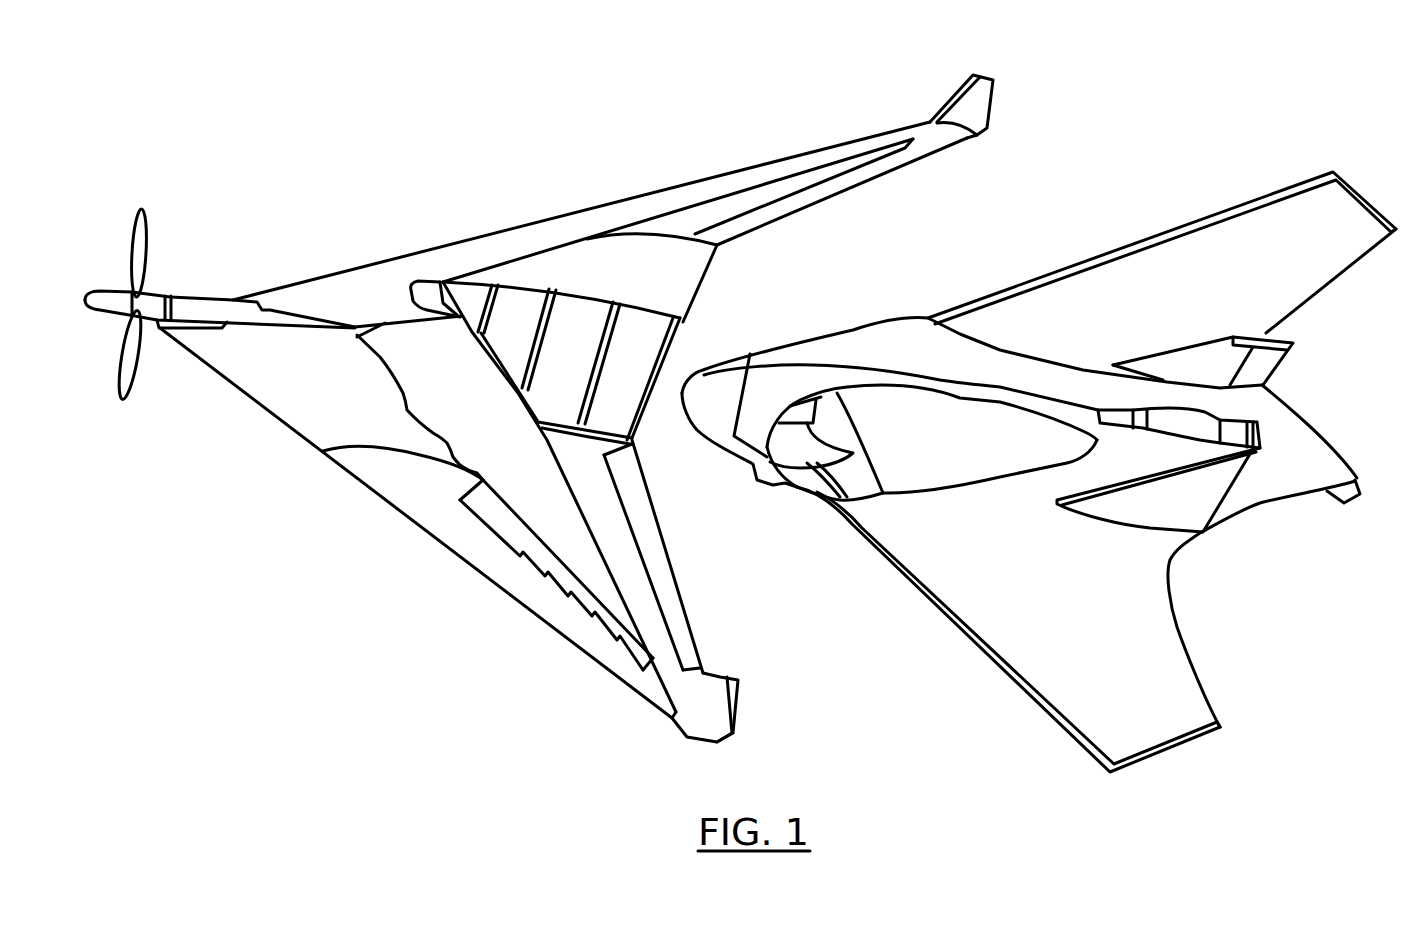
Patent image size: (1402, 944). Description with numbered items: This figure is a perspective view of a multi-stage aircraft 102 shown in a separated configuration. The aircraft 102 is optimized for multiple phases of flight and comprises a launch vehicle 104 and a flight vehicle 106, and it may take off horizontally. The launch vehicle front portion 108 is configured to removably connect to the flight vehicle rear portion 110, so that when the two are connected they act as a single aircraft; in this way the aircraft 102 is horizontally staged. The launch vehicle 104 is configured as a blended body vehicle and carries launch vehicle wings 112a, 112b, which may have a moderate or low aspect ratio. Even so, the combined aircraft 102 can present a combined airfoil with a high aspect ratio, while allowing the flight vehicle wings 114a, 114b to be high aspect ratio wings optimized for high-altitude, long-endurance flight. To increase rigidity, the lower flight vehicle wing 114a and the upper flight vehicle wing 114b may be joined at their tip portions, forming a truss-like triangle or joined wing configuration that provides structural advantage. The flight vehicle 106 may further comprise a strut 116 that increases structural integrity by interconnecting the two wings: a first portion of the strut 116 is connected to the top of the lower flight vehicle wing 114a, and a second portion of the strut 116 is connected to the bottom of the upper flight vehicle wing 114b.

The multi-stage aircraft 102 is at (1385, 58).
The launch vehicle 104 is at (1355, 783).
The flight vehicle 106 is at (747, 783).
The launch vehicle front portion 108 is at (705, 372).
The flight vehicle rear portion 110 is at (378, 364).
The launch vehicle wing 112a is at (1027, 696).
The launch vehicle wing 112b is at (1112, 252).
The lower flight vehicle wing 114a is at (515, 600).
The upper flight vehicle wing 114b is at (556, 462).
The strut 116 is at (349, 295).